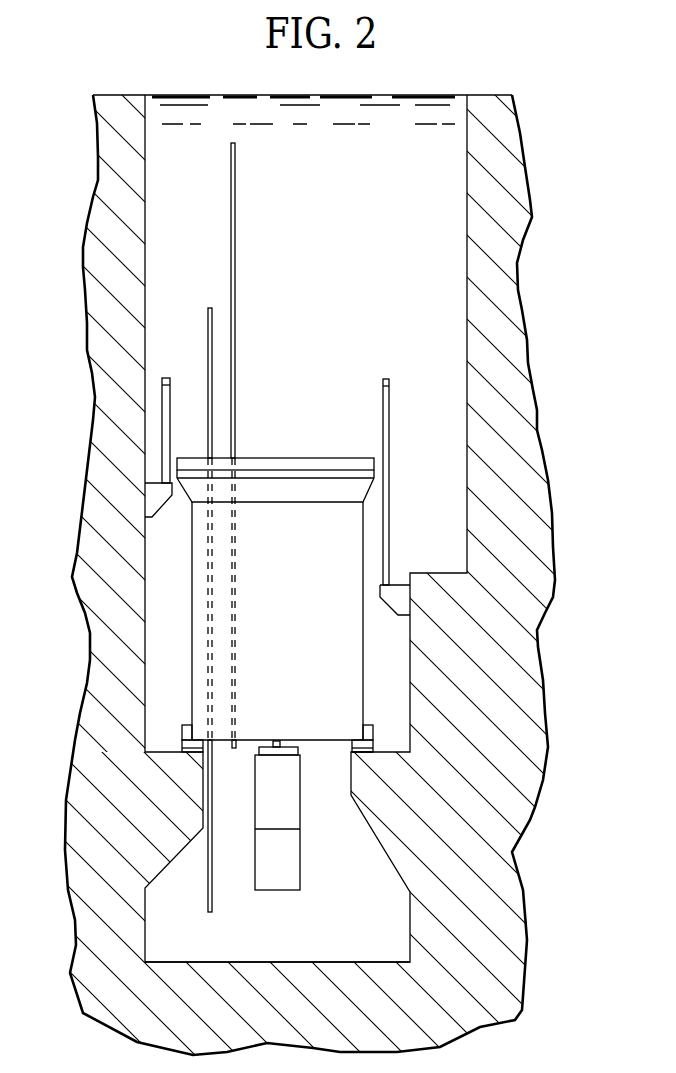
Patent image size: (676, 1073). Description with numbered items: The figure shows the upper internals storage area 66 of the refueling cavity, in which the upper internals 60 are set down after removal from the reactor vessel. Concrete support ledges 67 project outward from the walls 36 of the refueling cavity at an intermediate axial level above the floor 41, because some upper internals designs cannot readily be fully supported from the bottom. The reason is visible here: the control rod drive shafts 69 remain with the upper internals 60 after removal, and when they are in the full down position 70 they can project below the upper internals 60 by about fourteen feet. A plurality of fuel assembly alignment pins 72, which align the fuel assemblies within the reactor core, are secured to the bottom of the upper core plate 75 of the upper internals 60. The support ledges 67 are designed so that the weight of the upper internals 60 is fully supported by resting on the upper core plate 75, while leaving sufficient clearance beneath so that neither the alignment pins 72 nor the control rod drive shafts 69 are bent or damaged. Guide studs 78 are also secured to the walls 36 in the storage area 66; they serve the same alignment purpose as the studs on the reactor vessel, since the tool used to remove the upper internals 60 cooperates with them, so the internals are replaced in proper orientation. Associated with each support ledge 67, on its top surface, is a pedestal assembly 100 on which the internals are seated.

The walls of the refueling cavity 36 is at (467, 255).
The upper internals storage area 66 is at (589, 312).
The control rod drive shafts 69 is at (231, 178).
The full down position 70 is at (216, 893).
The guide studs 78 is at (383, 400).
The upper internals 60 is at (310, 458).
The upper core plate 75 is at (248, 742).
The fuel assembly alignment pins 72 is at (347, 750).
The pedestal assembly 100 is at (351, 728).
The concrete support ledges 67 is at (300, 813).
The floor 41 is at (288, 962).